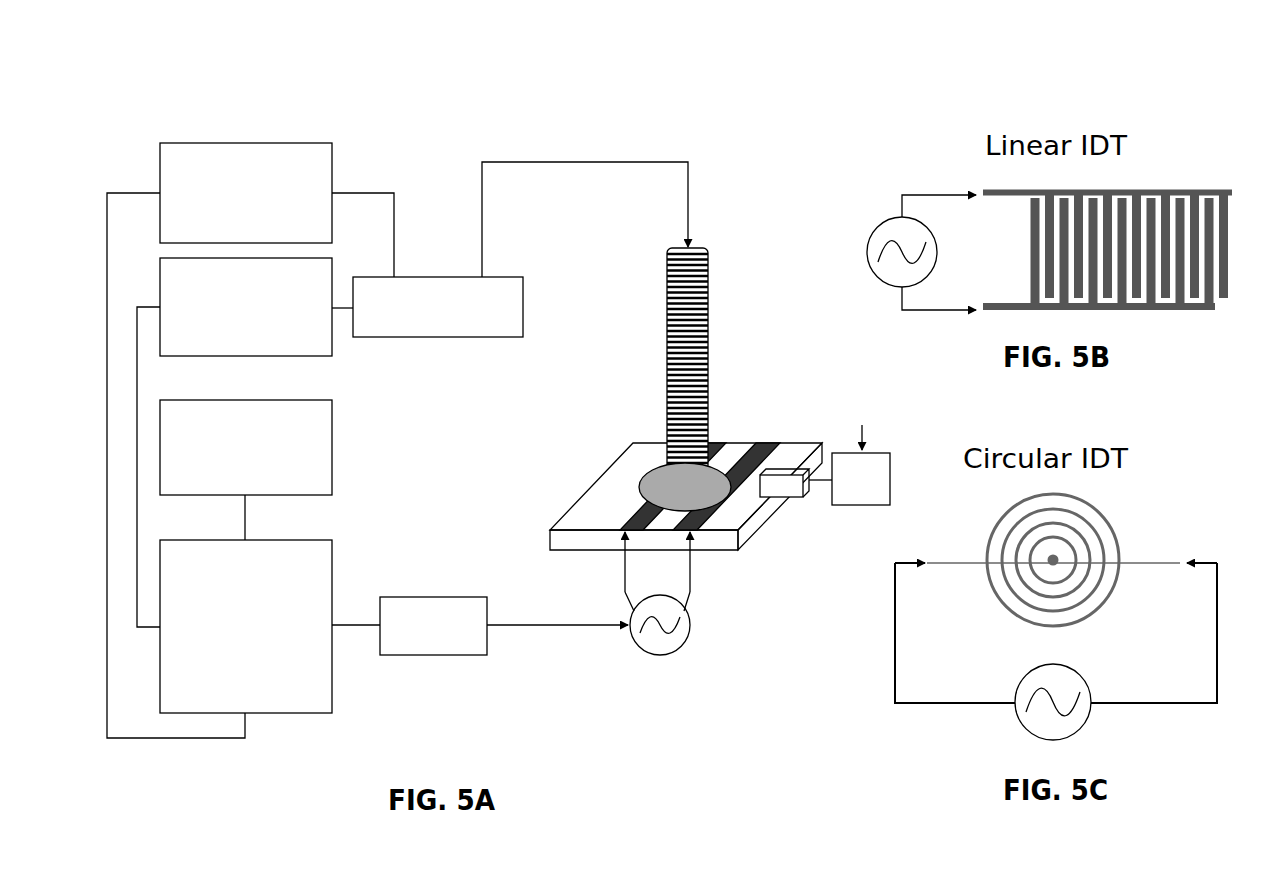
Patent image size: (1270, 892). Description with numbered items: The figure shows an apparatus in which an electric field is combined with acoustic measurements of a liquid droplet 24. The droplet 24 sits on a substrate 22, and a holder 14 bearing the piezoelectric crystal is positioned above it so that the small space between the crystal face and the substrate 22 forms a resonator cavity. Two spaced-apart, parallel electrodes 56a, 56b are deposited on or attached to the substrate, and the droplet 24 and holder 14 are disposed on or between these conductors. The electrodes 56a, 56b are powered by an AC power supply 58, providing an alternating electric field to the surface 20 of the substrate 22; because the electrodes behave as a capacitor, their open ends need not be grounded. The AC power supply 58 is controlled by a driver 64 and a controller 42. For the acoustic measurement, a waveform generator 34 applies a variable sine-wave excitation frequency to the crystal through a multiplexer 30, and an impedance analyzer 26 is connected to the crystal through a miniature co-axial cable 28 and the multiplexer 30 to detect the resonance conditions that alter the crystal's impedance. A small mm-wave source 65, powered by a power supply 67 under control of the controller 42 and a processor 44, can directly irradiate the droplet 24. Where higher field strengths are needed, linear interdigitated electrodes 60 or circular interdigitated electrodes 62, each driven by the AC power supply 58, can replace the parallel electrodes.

In FIG. 5A, the holder 14 is at (715, 378).
In FIG. 5A, the surface of substrate 20 is at (790, 450).
In FIG. 5A, the substrate 22 is at (770, 520).
In FIG. 5A, the droplet 24 is at (642, 486).
In FIG. 5A, the impedance analyzer 26 is at (334, 142).
In FIG. 5A, the miniature co-axial cable 28 is at (567, 158).
In FIG. 5A, the multiplexer 30 is at (438, 340).
In FIG. 5A, the waveform generator 34 is at (334, 358).
In FIG. 5A, the controller 42 is at (293, 716).
In FIG. 5A, the processor 44 is at (335, 470).
In FIG. 5A, the electrode 56a is at (615, 522).
In FIG. 5A, the electrode 56b is at (747, 437).
In FIG. 5A, the AC power supply 58 is at (634, 648).
In FIG. 5B, the AC power supply 58 is at (866, 232).
In FIG. 5C, the AC power supply 58 is at (1012, 722).
In FIG. 5B, the interdigitated electrodes 60 is at (1162, 187).
In FIG. 5C, the interdigitated electrodes 62 is at (1116, 530).
In FIG. 5A, the driver 64 is at (429, 658).
In FIG. 5A, the mm-wave source 65 is at (806, 500).
In FIG. 5A, the power supply 67 is at (873, 447).